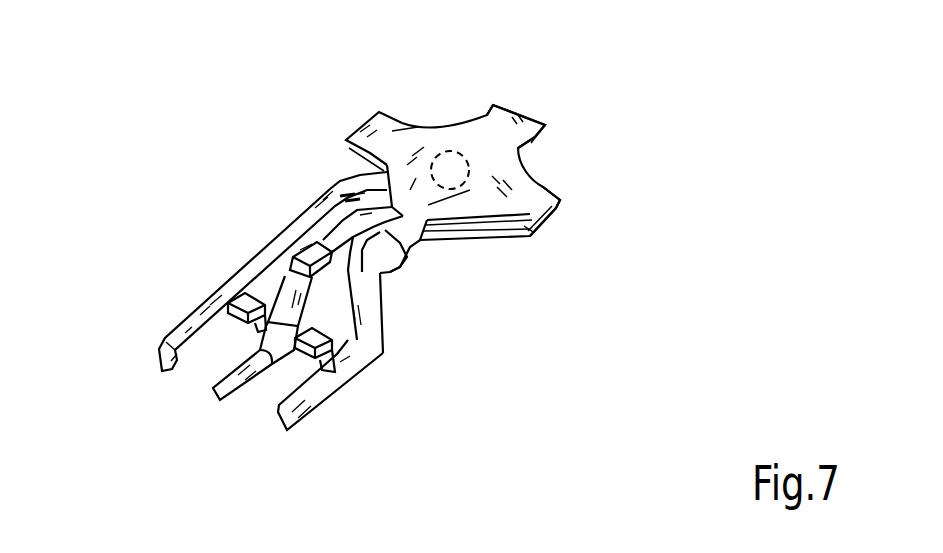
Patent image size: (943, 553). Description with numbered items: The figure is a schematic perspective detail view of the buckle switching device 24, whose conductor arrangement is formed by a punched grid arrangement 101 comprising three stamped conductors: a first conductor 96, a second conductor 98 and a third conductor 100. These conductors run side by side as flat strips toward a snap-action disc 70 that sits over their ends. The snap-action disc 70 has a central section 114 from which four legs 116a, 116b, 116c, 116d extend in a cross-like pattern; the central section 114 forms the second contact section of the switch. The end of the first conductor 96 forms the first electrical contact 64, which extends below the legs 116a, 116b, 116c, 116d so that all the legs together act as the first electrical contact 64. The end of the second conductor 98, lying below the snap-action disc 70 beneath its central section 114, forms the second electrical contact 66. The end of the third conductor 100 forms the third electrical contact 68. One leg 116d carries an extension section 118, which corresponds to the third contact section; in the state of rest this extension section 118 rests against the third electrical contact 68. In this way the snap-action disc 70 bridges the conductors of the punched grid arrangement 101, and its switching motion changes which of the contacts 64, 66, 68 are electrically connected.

The buckle switching device 24 is at (648, 207).
The snap-action disc 70 is at (525, 167).
The central section 114 is at (464, 157).
The leg 116a is at (402, 123).
The leg 116b is at (533, 120).
The leg 116c is at (547, 227).
The leg 116d is at (424, 240).
The second electrical contact 66 is at (432, 170).
The first electrical contact 64 is at (497, 242).
The first conductor 96 is at (352, 216).
The second conductor 98 is at (240, 275).
The third electrical contact 68 is at (383, 270).
The extension section 118 is at (407, 253).
The third conductor 100 is at (373, 347).
The punched grid arrangement 101 is at (347, 396).